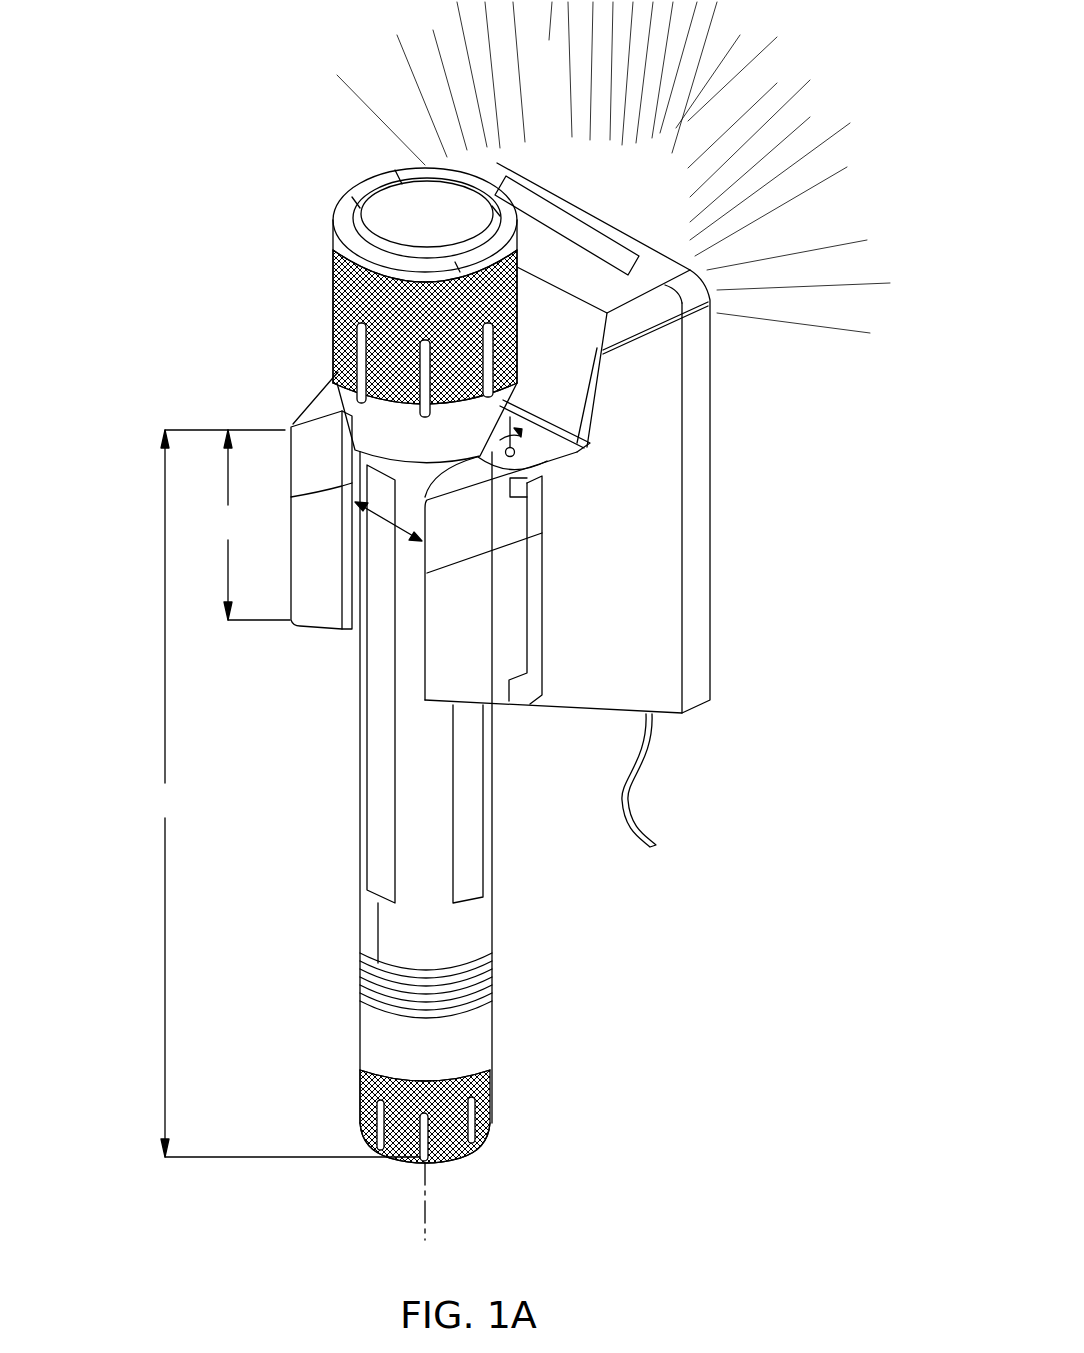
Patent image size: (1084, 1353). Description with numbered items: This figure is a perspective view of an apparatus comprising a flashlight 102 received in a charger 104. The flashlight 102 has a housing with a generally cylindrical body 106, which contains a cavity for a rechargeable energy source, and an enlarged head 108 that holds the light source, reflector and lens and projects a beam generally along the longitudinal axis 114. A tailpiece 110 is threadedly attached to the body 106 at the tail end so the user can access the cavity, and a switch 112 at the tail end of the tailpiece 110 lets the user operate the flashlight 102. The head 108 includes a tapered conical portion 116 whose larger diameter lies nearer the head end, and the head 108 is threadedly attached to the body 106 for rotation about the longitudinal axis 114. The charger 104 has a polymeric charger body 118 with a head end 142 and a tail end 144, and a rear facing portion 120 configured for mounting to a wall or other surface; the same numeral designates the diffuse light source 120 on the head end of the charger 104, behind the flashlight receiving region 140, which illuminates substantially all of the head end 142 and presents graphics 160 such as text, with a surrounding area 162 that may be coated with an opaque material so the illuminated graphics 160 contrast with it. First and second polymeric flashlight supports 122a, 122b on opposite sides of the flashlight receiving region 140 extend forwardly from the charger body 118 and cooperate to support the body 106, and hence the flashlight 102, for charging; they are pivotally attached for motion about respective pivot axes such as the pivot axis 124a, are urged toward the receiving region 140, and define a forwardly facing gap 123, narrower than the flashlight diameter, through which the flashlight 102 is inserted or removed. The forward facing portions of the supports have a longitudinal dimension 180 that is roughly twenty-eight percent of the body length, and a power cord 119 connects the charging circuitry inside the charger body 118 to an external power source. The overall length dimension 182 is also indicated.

The flashlight 102 is at (387, 704).
The charger 104 is at (541, 493).
The body 106 is at (444, 961).
The head 108 is at (340, 223).
The tailpiece 110 is at (360, 1101).
The switch 112 is at (490, 1161).
The longitudinal axis 114 is at (425, 1212).
The conical portion 116 is at (444, 452).
The charger body 118 is at (630, 543).
The power cord 119 is at (635, 802).
The rear facing portion / diffuse light source 120 is at (606, 426).
The first flashlight support 122a is at (502, 633).
The second flashlight support 122b is at (345, 634).
The forwardly facing gap 123 is at (388, 522).
The pivot axis 124a is at (510, 417).
The flashlight receiving region 140 is at (361, 292).
The head end 142 is at (525, 135).
The tail end 144 is at (576, 728).
The graphics 160 is at (548, 198).
The area surrounding the graphics 162 is at (646, 246).
The longitudinal dimension 180 is at (249, 525).
The overall height 182 is at (282, 793).